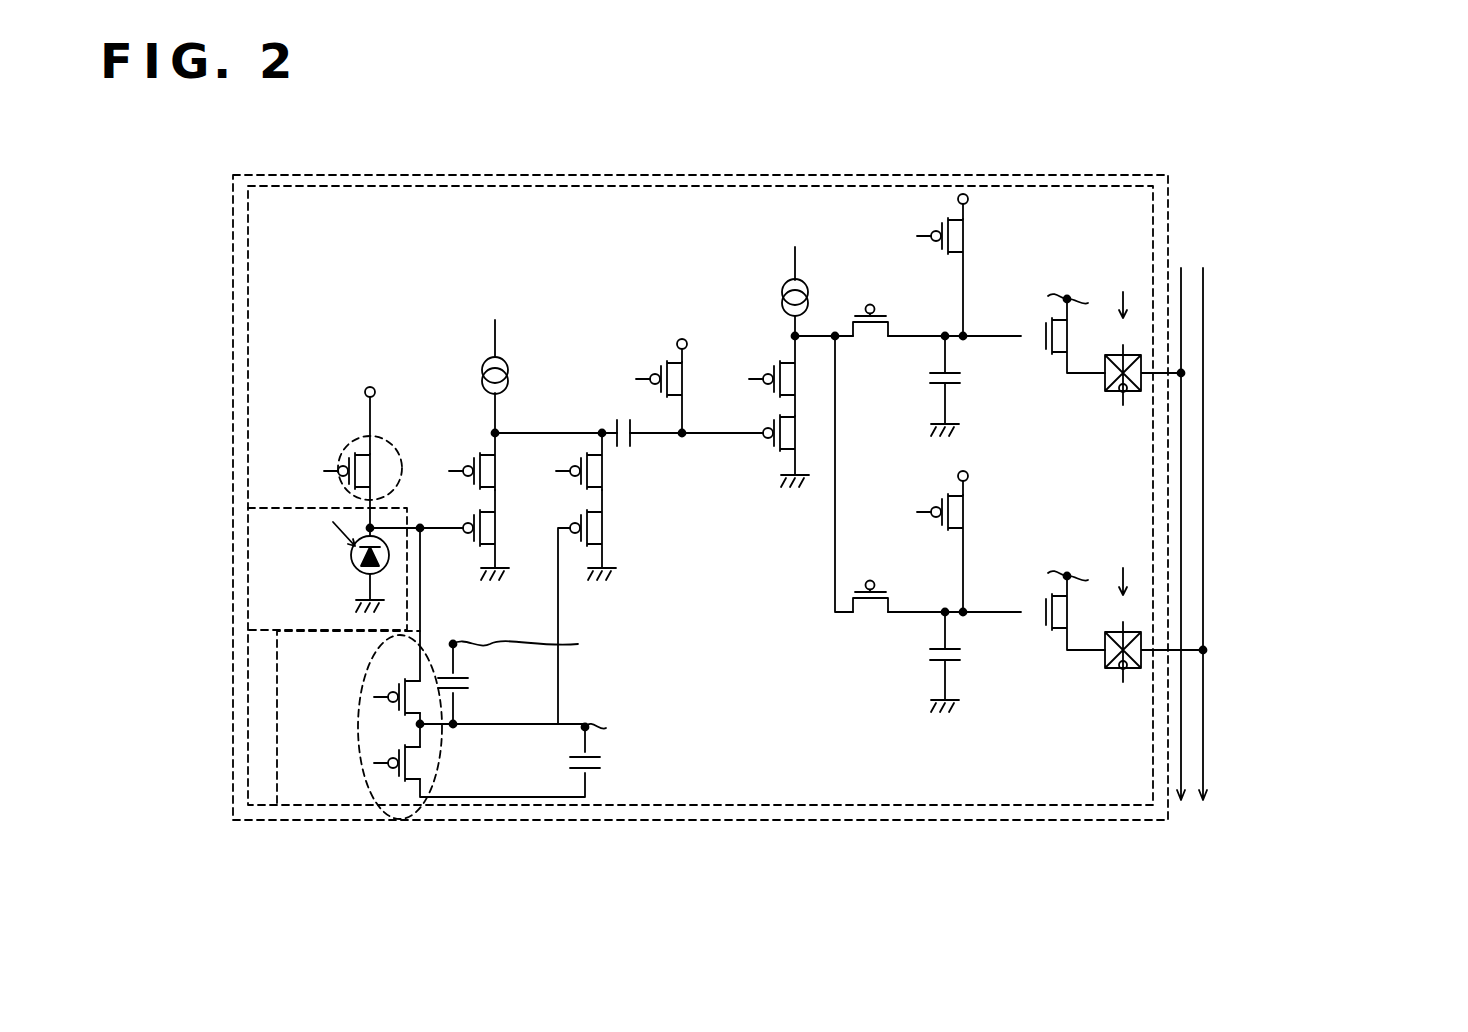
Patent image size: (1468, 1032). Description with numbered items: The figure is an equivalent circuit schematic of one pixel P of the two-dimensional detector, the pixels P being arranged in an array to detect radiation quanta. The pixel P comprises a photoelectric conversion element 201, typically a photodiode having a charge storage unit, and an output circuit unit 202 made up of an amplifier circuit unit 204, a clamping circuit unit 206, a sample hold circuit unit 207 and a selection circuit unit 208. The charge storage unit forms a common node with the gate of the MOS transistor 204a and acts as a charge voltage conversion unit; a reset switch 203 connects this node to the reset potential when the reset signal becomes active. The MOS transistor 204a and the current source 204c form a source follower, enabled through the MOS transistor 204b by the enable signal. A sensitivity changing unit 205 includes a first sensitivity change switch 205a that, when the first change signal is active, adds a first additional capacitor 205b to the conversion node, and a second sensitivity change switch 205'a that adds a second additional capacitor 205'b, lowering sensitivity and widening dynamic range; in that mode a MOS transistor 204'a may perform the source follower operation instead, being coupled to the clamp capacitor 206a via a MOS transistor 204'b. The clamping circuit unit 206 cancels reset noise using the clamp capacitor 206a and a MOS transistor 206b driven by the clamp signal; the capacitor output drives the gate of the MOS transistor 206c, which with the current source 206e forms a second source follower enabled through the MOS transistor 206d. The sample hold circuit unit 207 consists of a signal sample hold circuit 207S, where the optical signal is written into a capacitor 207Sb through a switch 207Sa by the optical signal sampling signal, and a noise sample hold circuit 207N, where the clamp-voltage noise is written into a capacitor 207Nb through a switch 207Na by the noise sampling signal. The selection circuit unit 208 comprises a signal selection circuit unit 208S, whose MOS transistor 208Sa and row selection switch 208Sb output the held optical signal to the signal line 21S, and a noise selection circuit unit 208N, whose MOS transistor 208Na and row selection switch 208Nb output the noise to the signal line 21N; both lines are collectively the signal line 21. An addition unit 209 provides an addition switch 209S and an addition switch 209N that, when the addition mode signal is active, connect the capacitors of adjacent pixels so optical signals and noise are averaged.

The pixel P is at (232, 222).
The photoelectric conversion element 201 is at (360, 566).
The output circuit unit 202 is at (353, 186).
The reset switch 203 is at (345, 483).
The amplifier circuit unit 204 is at (529, 456).
The MOS transistor 204a is at (470, 523).
The MOS transistor 204b is at (475, 455).
The current source 204c is at (490, 365).
The MOS transistor 204'a is at (637, 607).
The MOS transistor 204'b is at (610, 480).
The sensitivity changing unit 205 is at (436, 673).
The first sensitivity change switch 205a is at (397, 708).
The first additional capacitor 205b is at (435, 680).
The second sensitivity change switch 205'a is at (284, 751).
The second additional capacitor 205'b is at (469, 753).
The clamping circuit unit 206 is at (805, 117).
The clamp capacitor 206a is at (615, 430).
The MOS transistor 206b is at (655, 374).
The MOS transistor 206c is at (765, 430).
The MOS transistor 206d is at (773, 373).
The current source 206e is at (783, 285).
The sample hold circuit unit 207 is at (1130, 102).
The signal sample hold circuit 207S is at (1003, 147).
The noise sample hold circuit 207N is at (1180, 147).
The switch 207Sa is at (865, 311).
The capacitor 207Sb is at (965, 378).
The switch 207Na is at (885, 585).
The capacitor 207Nb is at (965, 655).
The selection circuit unit 208 is at (1383, 350).
The signal selection circuit unit 208S is at (1296, 345).
The noise selection circuit unit 208N is at (1296, 615).
The MOS transistor 208Sa is at (1067, 340).
The row selection switch 208Sb is at (1133, 385).
The MOS transistor 208Na is at (1067, 618).
The row selection switch 208Nb is at (1140, 660).
The addition unit 209 is at (935, 856).
The addition switch 209S is at (943, 258).
The addition switch 209N is at (930, 530).
The signal line 21 is at (1310, 712).
The signal line 21S is at (1181, 727).
The signal line 21N is at (1203, 772).